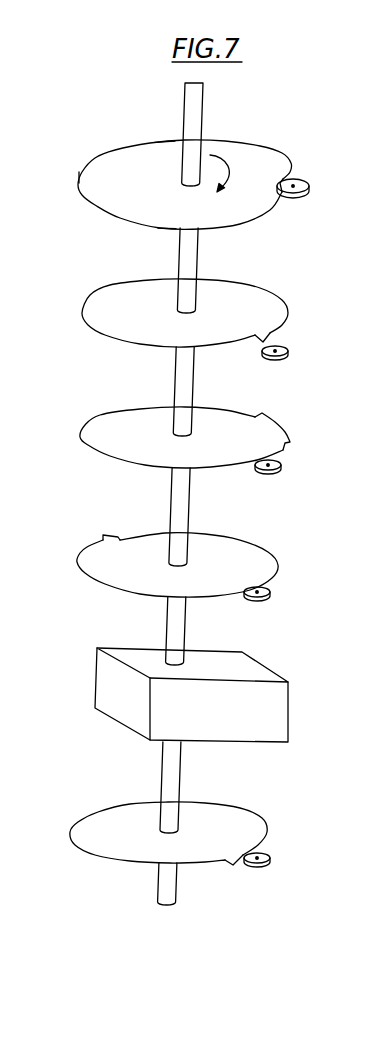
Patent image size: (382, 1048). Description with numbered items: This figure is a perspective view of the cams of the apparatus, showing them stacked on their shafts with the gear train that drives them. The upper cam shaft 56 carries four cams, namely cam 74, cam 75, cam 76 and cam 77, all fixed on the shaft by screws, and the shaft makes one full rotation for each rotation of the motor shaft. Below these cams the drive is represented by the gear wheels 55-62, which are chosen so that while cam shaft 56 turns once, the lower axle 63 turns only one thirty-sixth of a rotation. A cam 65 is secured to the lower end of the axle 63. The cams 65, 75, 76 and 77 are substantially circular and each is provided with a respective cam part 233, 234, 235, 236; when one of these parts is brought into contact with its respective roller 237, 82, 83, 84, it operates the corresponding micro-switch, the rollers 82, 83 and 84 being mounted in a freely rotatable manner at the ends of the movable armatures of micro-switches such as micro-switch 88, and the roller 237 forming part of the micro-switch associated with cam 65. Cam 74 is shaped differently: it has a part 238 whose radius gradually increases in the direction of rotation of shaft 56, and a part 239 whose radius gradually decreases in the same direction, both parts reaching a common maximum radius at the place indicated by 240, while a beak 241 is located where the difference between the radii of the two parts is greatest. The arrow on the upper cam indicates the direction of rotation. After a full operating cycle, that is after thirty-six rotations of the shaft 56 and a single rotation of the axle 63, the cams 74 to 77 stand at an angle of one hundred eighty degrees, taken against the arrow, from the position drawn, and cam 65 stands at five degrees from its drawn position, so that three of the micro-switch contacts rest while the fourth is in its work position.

The cam shaft 56 is at (188, 628).
The axle 63 is at (181, 780).
The cam 74 is at (187, 186).
The cam 75 is at (185, 332).
The cam 76 is at (203, 443).
The cam 77 is at (177, 562).
The cam 65 is at (172, 850).
The micro-switch 88 is at (289, 190).
The roller 82 is at (288, 352).
The roller 83 is at (276, 470).
The roller 84 is at (270, 595).
The roller 237 is at (270, 858).
The cam part 239 is at (165, 143).
The place of common maximum radius 240 is at (87, 166).
The beak 241 is at (288, 172).
The cam part 238 is at (167, 227).
The cam part 234 is at (254, 343).
The cam part 235 is at (273, 428).
The cam part 236 is at (105, 538).
The cam part 233 is at (236, 866).
The gear wheels 55-62 is at (257, 722).